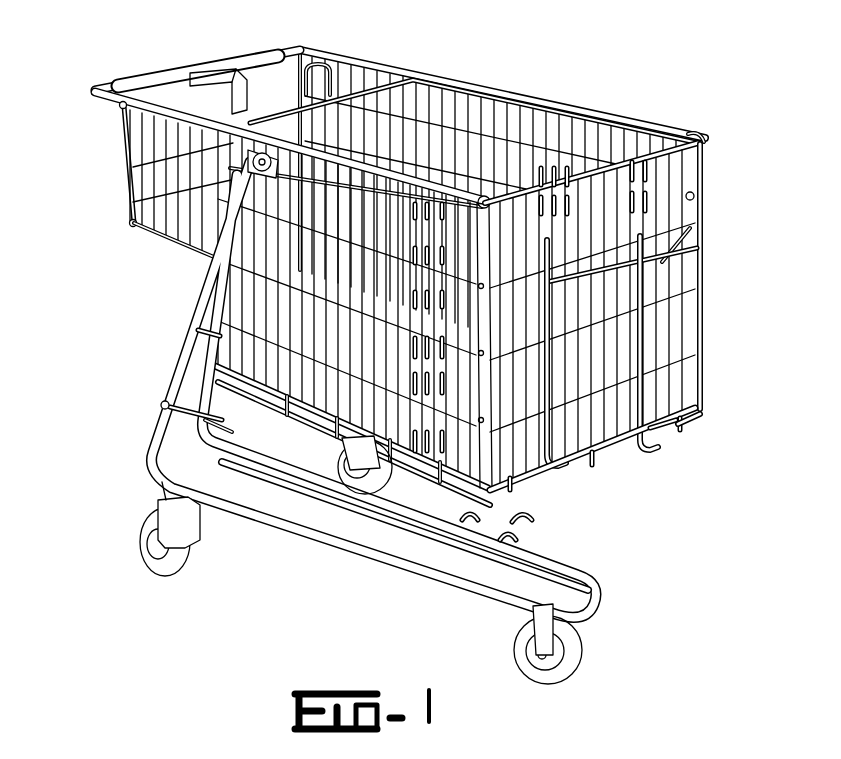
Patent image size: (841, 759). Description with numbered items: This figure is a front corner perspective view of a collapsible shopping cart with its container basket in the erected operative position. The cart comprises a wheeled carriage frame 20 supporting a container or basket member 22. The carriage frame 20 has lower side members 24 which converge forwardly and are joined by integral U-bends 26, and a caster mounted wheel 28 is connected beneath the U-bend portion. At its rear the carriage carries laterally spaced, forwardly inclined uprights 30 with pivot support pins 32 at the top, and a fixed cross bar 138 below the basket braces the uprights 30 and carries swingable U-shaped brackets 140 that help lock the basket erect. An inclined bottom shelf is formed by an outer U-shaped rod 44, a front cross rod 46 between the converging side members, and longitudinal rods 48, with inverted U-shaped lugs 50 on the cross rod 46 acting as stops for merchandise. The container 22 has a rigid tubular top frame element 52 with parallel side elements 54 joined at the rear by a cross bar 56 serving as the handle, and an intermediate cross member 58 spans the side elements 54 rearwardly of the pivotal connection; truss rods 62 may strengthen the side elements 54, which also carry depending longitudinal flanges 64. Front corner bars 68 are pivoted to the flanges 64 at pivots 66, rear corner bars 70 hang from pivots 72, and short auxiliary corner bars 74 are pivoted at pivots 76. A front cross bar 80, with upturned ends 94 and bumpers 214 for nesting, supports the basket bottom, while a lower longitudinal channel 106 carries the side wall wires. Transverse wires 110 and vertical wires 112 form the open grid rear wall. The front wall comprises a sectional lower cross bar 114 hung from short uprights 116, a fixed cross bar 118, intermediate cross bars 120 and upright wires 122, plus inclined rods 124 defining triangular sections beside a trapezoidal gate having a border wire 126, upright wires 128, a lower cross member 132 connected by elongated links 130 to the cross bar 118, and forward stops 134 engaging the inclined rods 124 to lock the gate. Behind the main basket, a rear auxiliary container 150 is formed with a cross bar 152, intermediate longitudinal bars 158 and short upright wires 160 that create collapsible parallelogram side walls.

The wheeled carriage frame 20 is at (132, 472).
The container or basket member 22 is at (728, 256).
The lower side members 24 is at (322, 583).
The U-bends 26 is at (592, 584).
The caster mounted wheel 28 is at (582, 652).
The uprights 30 is at (168, 336).
The pivot support pins 32 is at (263, 152).
The outer U-shaped rod 44 is at (162, 408).
The cross rod 46 is at (508, 540).
The longitudinal rods 48 is at (468, 528).
The inverted U-shaped lugs 50 is at (530, 516).
The basket top frame element 52 is at (507, 84).
The side elements 54 is at (600, 118).
The cross bar 56 is at (92, 92).
The basket top rim 58 is at (400, 80).
The truss rods 62 is at (206, 246).
The depending longitudinal flanges 64 is at (140, 127).
The pivots 66 is at (478, 206).
The front corner bars 68 is at (476, 352).
The rear corner bars 70 is at (212, 262).
The pivots 72 is at (138, 203).
The auxiliary corner bars 74 is at (130, 224).
The pivots 76 is at (120, 107).
The front cross bar 80 is at (600, 448).
The upturned ends 94 is at (470, 496).
The lower longitudinal channel 106 is at (300, 430).
The transverse rods or wires 110 is at (415, 118).
The vertical wires 112 is at (430, 96).
The sectional lower cross bar 114 is at (703, 412).
The short uprights 116 is at (562, 466).
The fixed cross bar 118 is at (696, 266).
The intermediate cross bars 120 is at (702, 352).
The upright rods or wires 122 is at (700, 370).
The inclined rod 124 is at (695, 232).
The trapezoidal border wire 126 is at (690, 134).
The upright wires 128 is at (703, 166).
The elongated links 130 is at (543, 278).
The lower cross member 132 is at (632, 248).
The forward stops 134 is at (696, 196).
The fixed cross bar 138 is at (222, 426).
The U-shaped brackets 140 is at (215, 380).
The rear or auxiliary container 150 is at (93, 191).
The cross bar 152 is at (140, 240).
The intermediate longitudinal bars or wires 158 is at (130, 166).
The short upright wires 160 is at (172, 135).
The bumpers 214 is at (684, 426).